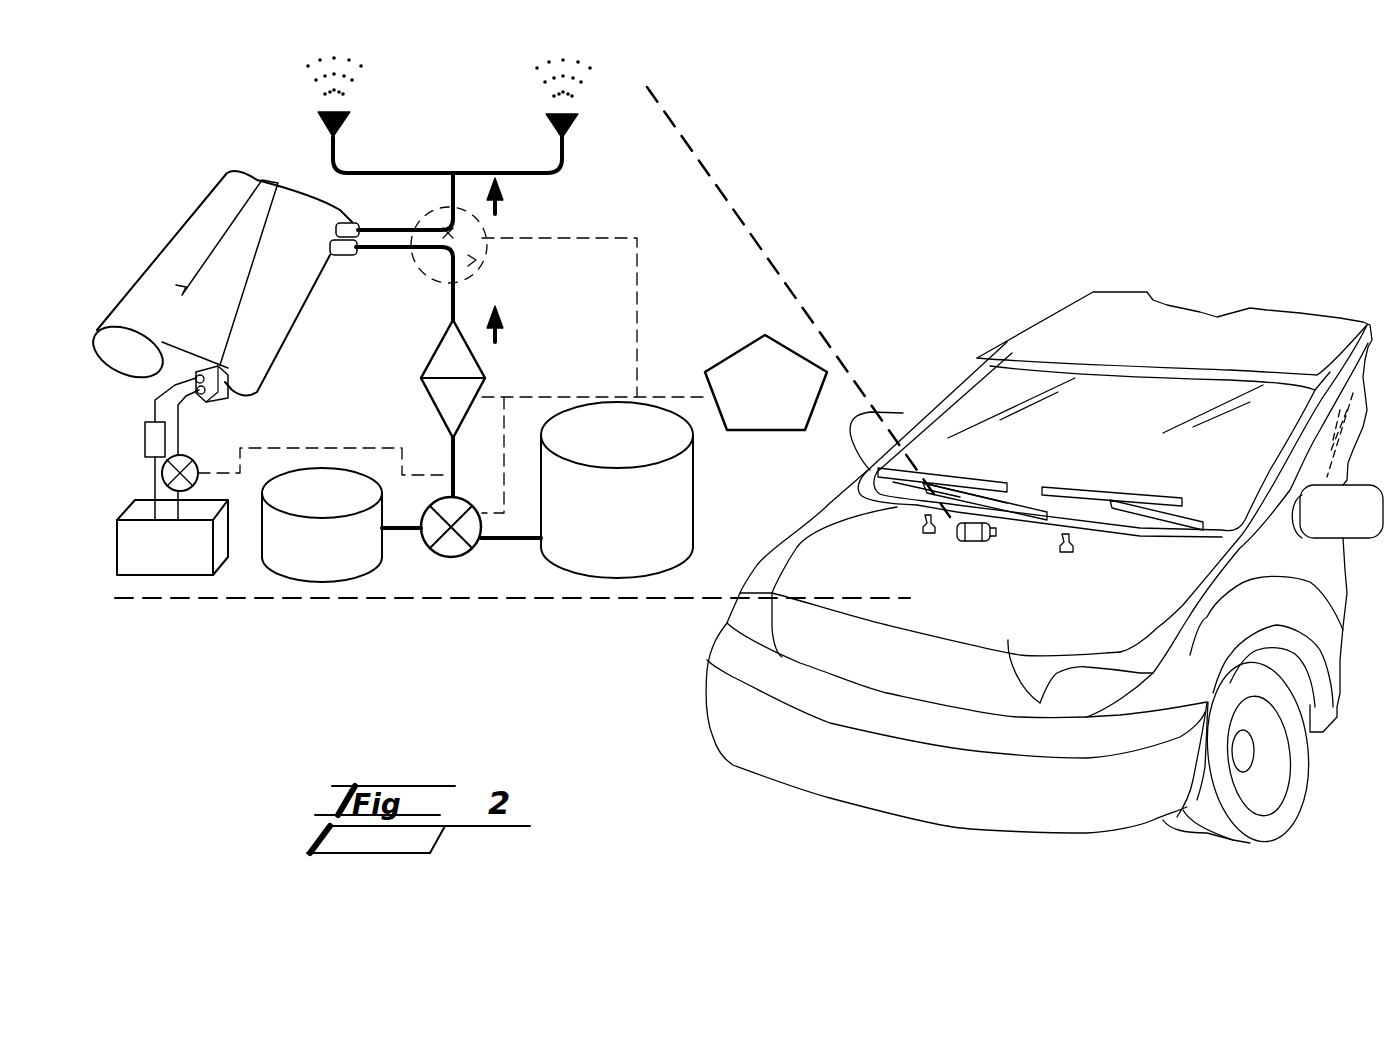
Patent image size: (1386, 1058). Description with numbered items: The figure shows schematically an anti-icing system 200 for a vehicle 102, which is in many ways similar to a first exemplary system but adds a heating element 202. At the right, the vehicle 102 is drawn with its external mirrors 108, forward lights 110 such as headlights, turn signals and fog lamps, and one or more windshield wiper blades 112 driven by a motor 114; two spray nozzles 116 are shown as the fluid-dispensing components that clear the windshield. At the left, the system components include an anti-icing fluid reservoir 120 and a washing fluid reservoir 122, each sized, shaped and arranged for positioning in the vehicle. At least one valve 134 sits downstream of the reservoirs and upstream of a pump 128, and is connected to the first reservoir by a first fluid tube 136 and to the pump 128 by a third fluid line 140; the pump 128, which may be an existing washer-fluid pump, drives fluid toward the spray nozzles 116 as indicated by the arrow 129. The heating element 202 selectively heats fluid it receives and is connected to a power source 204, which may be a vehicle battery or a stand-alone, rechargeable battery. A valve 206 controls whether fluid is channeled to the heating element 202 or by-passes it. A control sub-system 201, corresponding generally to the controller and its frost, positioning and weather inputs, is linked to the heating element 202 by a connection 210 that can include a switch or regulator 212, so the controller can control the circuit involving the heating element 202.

The vehicle 102 is at (962, 368).
The external mirrors 108 is at (870, 414).
The forward lights 110 is at (1008, 640).
The windshield wiper blades 112 is at (898, 483).
The motor 114 is at (977, 541).
The spray nozzles 116 is at (598, 128).
The anti-icing fluid reservoir 120 is at (300, 572).
The washing fluid reservoir 122 is at (617, 578).
The pump 128 is at (433, 347).
The arrow 129 is at (500, 332).
The valve 134 is at (447, 558).
The first fluid tube 136 is at (401, 532).
The third fluid line 140 is at (448, 452).
The anti-icing system 200 is at (913, 168).
The control sub-system 201 is at (792, 406).
The heating element 202 is at (183, 213).
The power source 204 is at (176, 580).
The valve 206 is at (491, 245).
The connection 210 is at (302, 447).
The switch or regulator 212 is at (190, 443).